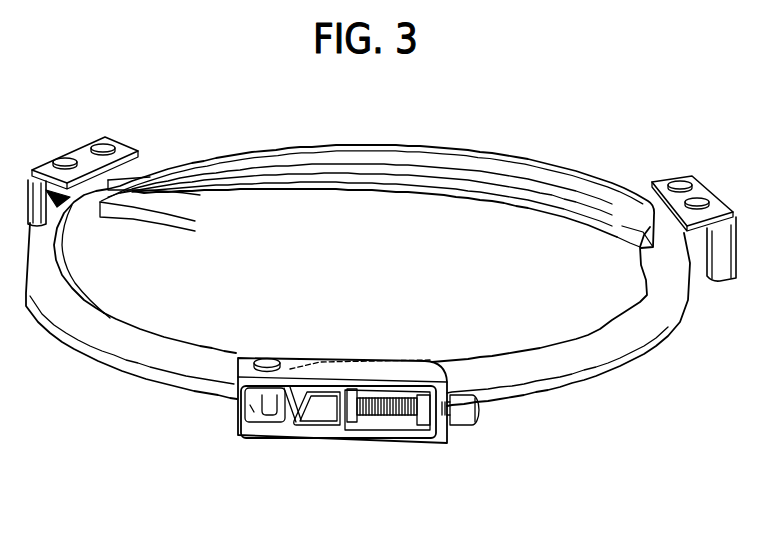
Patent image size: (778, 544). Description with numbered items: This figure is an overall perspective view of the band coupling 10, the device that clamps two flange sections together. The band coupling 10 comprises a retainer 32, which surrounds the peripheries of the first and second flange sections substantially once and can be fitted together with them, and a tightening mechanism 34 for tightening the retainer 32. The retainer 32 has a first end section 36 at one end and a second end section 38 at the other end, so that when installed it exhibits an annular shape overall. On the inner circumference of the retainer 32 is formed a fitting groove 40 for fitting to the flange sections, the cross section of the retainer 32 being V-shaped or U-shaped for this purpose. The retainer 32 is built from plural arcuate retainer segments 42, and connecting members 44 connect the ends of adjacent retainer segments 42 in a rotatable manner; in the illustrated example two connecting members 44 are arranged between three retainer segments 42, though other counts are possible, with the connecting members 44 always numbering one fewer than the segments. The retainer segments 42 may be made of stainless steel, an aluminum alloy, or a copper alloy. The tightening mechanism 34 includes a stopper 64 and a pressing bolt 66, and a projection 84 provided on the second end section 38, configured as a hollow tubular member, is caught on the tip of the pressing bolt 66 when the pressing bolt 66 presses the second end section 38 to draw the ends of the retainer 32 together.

The band coupling 10 is at (569, 108).
The retainer 32 is at (600, 173).
The tightening mechanism 34 is at (380, 453).
The first end section 36 is at (252, 430).
The second end section 38 is at (322, 417).
The fitting groove 40 is at (445, 166).
The retainer segments 42 is at (223, 156).
The connecting members 44 is at (83, 156).
The stopper 64 is at (402, 370).
The pressing bolt 66 is at (465, 422).
The projection 84 is at (354, 390).